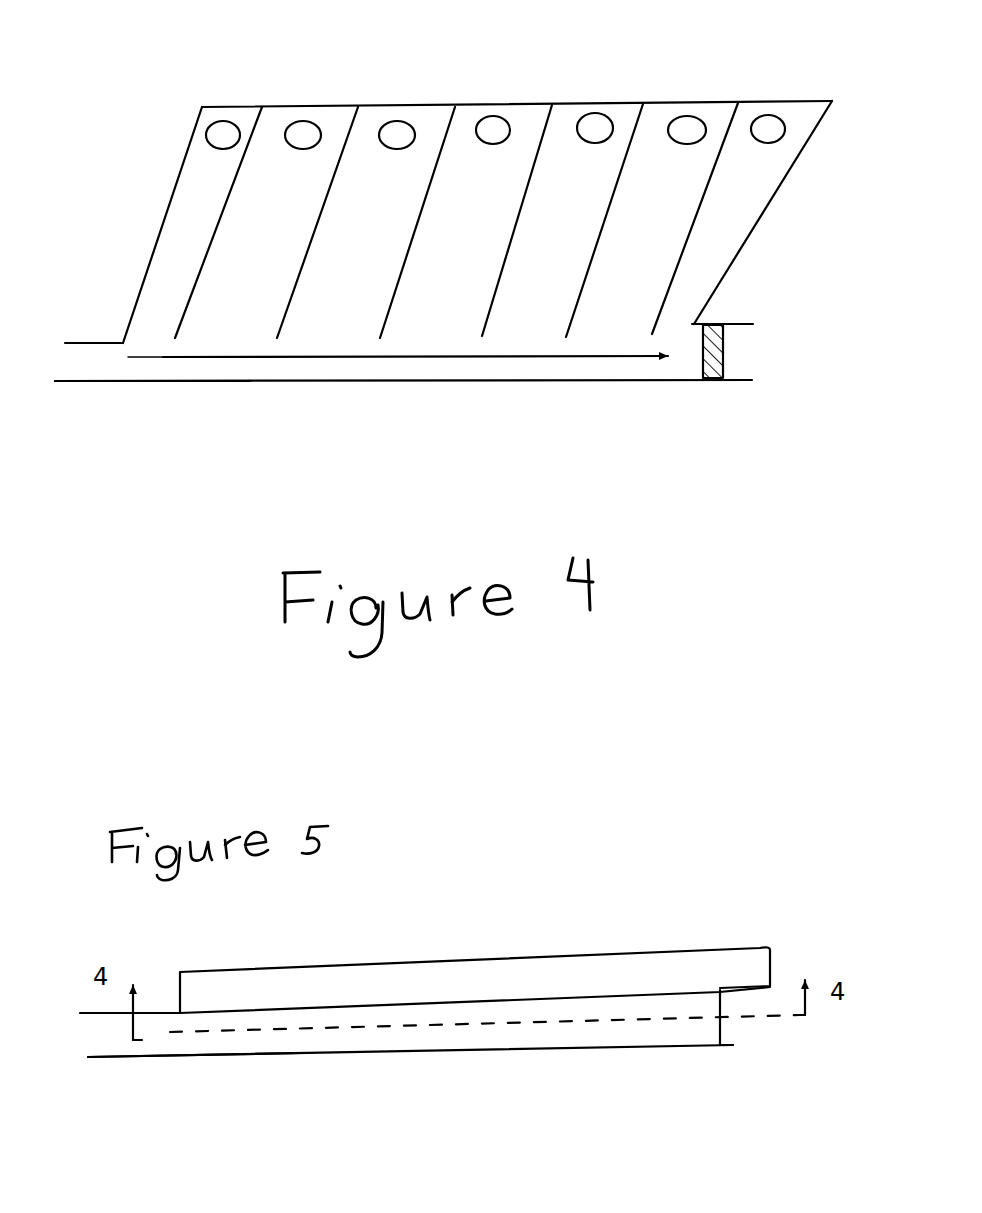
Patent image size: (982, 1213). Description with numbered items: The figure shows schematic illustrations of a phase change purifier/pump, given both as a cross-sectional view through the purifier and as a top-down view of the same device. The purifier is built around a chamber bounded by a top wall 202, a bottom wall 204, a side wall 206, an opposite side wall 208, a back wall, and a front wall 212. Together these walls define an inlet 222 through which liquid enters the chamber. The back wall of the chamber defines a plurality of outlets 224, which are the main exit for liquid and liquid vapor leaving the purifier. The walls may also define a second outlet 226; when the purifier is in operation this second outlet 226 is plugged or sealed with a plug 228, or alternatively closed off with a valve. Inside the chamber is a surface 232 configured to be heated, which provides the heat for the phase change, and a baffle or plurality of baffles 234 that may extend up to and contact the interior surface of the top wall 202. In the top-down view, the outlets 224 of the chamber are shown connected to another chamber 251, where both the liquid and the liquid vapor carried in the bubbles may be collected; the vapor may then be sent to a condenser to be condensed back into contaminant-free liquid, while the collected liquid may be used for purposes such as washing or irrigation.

In FIG. 4, the top wall 202 is at (426, 106).
In FIG. 4, the bottom wall 204 is at (250, 382).
In FIG. 4, the side wall 206 is at (172, 182).
In FIG. 4, the side wall 208 is at (777, 190).
In FIG. 4, the inlet 222 is at (84, 364).
In FIG. 5, the inlet 222 is at (112, 1028).
In FIG. 4, the outlets 224 is at (220, 133).
In FIG. 4, the second outlet 226 is at (762, 344).
In FIG. 4, the plug 228 is at (711, 385).
In FIG. 4, the surface configured to be heated 232 is at (382, 358).
In FIG. 4, the baffles 234 is at (637, 128).
In FIG. 5, the chamber 251 is at (467, 958).
In FIG. 5, the front wall 212 is at (446, 1050).